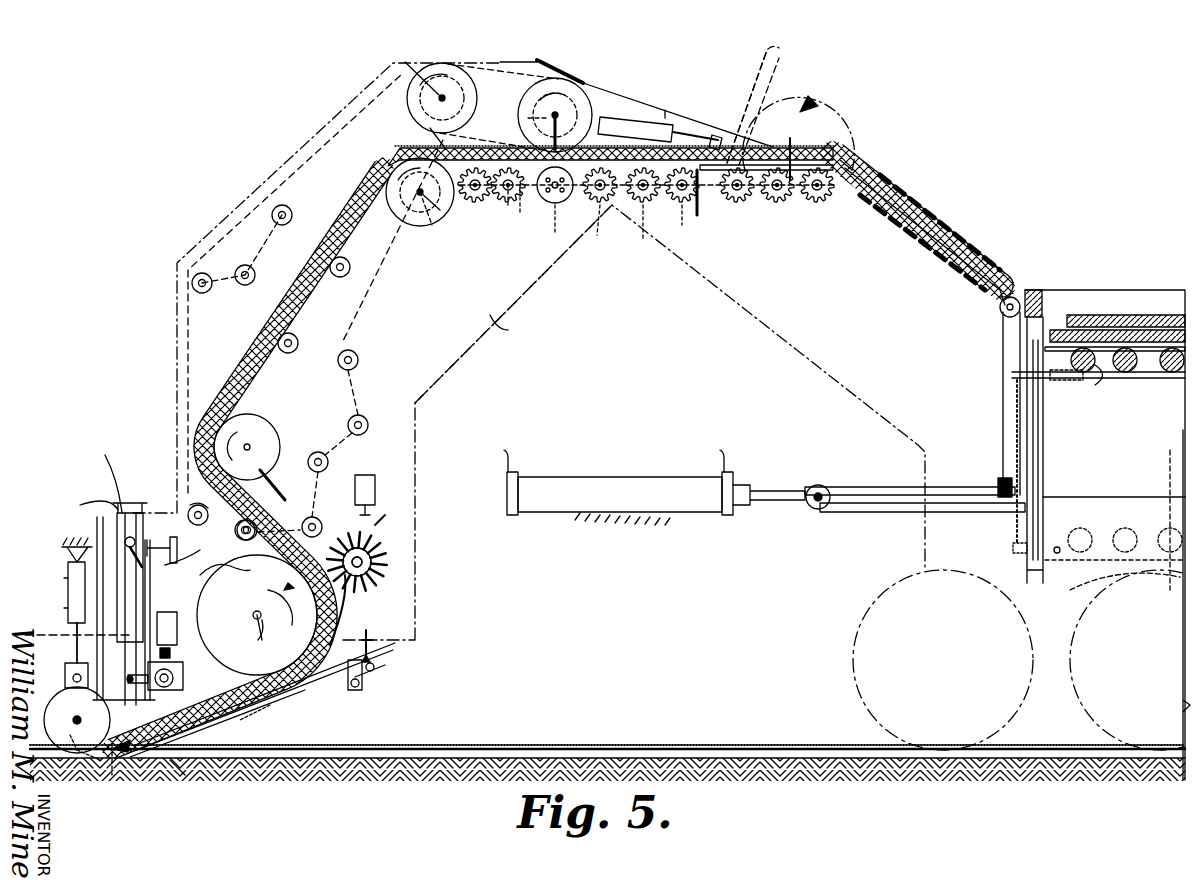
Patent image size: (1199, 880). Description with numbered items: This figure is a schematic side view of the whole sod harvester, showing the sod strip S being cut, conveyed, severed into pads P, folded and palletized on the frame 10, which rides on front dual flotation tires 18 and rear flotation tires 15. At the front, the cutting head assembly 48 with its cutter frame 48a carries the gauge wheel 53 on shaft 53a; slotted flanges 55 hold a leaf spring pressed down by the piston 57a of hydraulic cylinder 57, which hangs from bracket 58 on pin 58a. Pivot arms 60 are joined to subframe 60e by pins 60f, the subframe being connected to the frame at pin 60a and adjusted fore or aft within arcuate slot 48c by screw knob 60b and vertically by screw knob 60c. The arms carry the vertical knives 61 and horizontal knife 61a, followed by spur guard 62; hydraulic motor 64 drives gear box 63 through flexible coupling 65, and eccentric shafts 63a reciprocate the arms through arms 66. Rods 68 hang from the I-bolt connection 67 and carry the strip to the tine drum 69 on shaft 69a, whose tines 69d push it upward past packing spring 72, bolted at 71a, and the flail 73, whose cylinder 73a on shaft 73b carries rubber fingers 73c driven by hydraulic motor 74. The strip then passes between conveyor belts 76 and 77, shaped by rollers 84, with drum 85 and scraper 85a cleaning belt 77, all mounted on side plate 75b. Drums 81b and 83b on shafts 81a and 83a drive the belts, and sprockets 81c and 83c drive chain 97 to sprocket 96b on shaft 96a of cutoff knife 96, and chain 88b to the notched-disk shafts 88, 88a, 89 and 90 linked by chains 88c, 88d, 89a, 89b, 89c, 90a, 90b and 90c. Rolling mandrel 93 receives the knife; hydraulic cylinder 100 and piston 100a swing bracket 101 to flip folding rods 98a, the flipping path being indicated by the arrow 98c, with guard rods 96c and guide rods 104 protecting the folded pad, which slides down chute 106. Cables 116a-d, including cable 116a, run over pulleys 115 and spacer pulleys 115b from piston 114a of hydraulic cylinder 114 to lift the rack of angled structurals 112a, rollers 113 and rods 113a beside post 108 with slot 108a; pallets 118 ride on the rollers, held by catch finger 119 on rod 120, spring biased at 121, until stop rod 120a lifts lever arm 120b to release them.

The frame 10 is at (415, 640).
The flotation tires 15 is at (857, 680).
The dual flotation tires 18 is at (35, 612).
The cutting head assembly 48 is at (221, 521).
The cutter frame 48a is at (86, 498).
The arcuate slot 48c is at (193, 552).
The gauge wheel 53 is at (84, 716).
The shaft 53a is at (70, 765).
The slotted flanges 55 is at (65, 683).
The hydraulic cylinder 57 is at (72, 595).
The piston 57a is at (72, 650).
The bracket 58 is at (60, 550).
The pin 58a is at (63, 540).
The pivot arms 60 is at (122, 513).
The pin 60a is at (95, 635).
The screw knob 60b is at (136, 540).
The screw knob 60c is at (101, 477).
The subframe 60e is at (172, 537).
The pins 60f is at (150, 580).
The cutting knife 61 is at (107, 782).
The horizontal knife 61a is at (125, 760).
The spur guard 62 is at (225, 705).
The gear box 63 is at (165, 685).
The eccentric shaft 63a is at (183, 678).
The hydraulic motor 64 is at (167, 618).
The flexible coupling 65 is at (172, 653).
The arm 66 is at (182, 776).
The I-bolt-lock nut connection 67 is at (395, 648).
The rods 68 is at (250, 716).
The tine drum 69 is at (240, 639).
The shaft 69a is at (270, 637).
The tines 69d is at (222, 568).
The bolt 71a is at (366, 685).
The packing spring 72 is at (345, 610).
The flail 73 is at (395, 525).
The cylinder portion 73a is at (372, 553).
The shaft 73b is at (365, 562).
The rubber fingers 73c is at (376, 520).
The hydraulic motor 74 is at (362, 475).
The side plate 75b is at (508, 318).
The conveyor belt 76 is at (188, 370).
The conveyor belt 77 is at (392, 283).
The shaft 81a is at (430, 128).
The drum 81b is at (455, 65).
The sprocket 81c is at (412, 63).
The shaft 83a is at (432, 228).
The drum 83b is at (405, 215).
The sprocket 83c is at (445, 213).
The conveyor forming rollers 84 is at (208, 275).
The drum 85 is at (258, 420).
The scraper 85a is at (278, 486).
The shafts 88 is at (478, 195).
The shaft 88a is at (556, 229).
The chain 88b is at (400, 160).
The chain 88c is at (508, 210).
The chain 88d is at (530, 200).
The shafts 89 is at (605, 205).
The chain 89a is at (600, 234).
The chain 89b is at (645, 237).
The chain 89c is at (685, 228).
The shafts 90 is at (773, 236).
The chain 90a is at (737, 203).
The chain 90b is at (780, 203).
The chain 90c is at (825, 203).
The rolling mandrel 93 is at (565, 200).
The cutoff knife 96 is at (585, 100).
The rotary shaft 96a is at (528, 115).
The sprocket 96b is at (560, 60).
The inclined rods 96c is at (600, 85).
The chain 97 is at (499, 107).
The folding rods 98a is at (780, 62).
The arrow 98c is at (850, 160).
The hydraulic cylinder 100 is at (648, 112).
The piston 100a is at (700, 125).
The bracket 101 is at (725, 140).
The rods 104 is at (700, 215).
The inclined chute 106 is at (925, 245).
The post 108 is at (1045, 295).
The slot 108a is at (1060, 320).
The angled structurals 112a is at (1183, 433).
The rollers 113 is at (1128, 348).
The rods 113a is at (1098, 385).
The hydraulic cylinder 114 is at (608, 520).
The piston 114a is at (773, 500).
The pulleys 115 is at (822, 508).
The spacer pulleys 115b is at (998, 485).
The cable 116a is at (998, 308).
The cables 116a-d is at (843, 487).
The wooden pallet 118 is at (1075, 318).
The catch finger 119 is at (1105, 520).
The rod 120 is at (1118, 592).
The stop rod 120a is at (1057, 555).
The lever arm 120b is at (1040, 380).
The spring bias 121 is at (1159, 505).
The sod pad P is at (755, 70).
The sod strip S is at (305, 292).